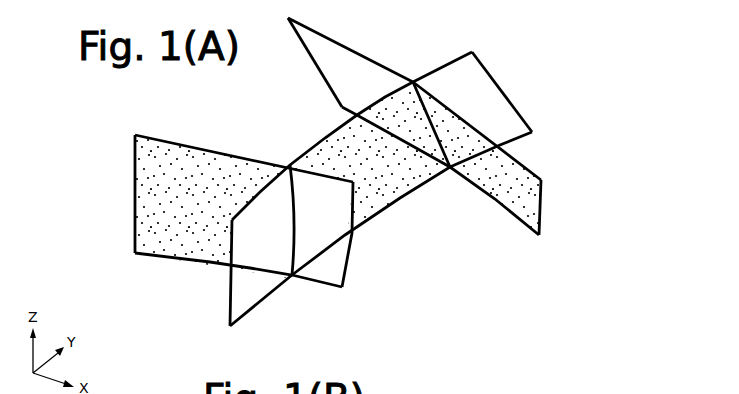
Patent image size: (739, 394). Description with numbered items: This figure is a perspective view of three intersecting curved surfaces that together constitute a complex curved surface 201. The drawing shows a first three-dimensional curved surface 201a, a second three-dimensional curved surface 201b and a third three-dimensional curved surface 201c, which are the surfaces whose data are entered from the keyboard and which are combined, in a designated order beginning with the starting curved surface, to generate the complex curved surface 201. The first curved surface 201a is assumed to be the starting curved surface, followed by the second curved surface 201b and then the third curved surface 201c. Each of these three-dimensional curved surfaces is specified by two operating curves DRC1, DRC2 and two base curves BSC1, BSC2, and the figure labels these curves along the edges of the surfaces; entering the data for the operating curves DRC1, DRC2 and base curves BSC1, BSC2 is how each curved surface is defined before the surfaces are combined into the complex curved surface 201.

The complex curved surface 201 is at (407, 196).
The first three-dimensional curved surface 201a is at (163, 257).
The second three-dimensional curved surface 201b is at (273, 284).
The third three-dimensional curved surface 201c is at (367, 62).
The base curve BSC1 is at (217, 152).
The base curve BSC2 is at (213, 264).
The operating curve DRC1 is at (307, 47).
The operating curve DRC2 is at (500, 88).